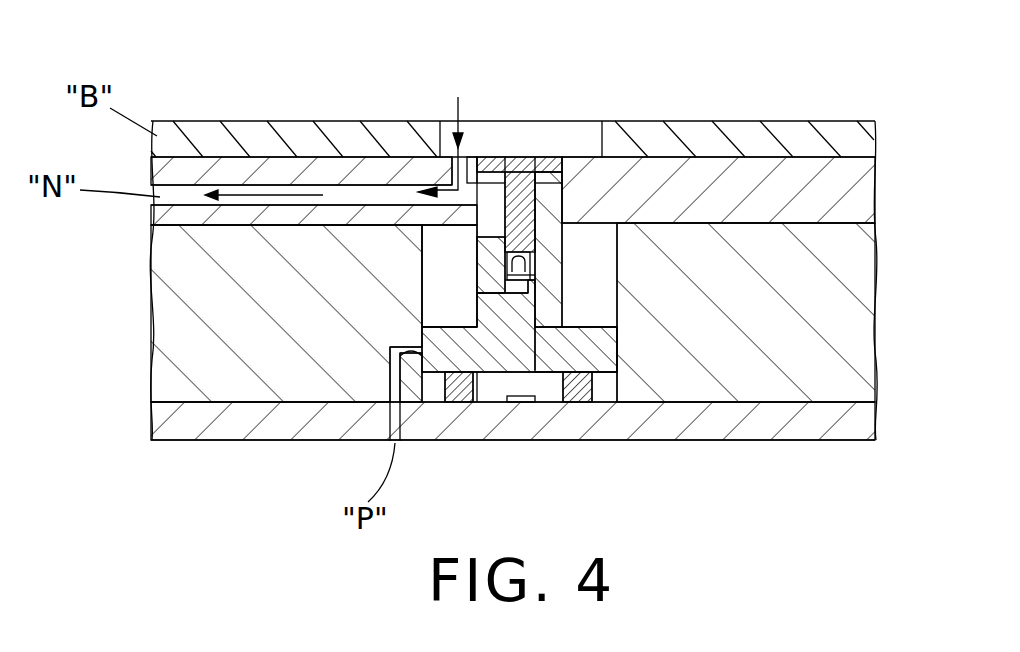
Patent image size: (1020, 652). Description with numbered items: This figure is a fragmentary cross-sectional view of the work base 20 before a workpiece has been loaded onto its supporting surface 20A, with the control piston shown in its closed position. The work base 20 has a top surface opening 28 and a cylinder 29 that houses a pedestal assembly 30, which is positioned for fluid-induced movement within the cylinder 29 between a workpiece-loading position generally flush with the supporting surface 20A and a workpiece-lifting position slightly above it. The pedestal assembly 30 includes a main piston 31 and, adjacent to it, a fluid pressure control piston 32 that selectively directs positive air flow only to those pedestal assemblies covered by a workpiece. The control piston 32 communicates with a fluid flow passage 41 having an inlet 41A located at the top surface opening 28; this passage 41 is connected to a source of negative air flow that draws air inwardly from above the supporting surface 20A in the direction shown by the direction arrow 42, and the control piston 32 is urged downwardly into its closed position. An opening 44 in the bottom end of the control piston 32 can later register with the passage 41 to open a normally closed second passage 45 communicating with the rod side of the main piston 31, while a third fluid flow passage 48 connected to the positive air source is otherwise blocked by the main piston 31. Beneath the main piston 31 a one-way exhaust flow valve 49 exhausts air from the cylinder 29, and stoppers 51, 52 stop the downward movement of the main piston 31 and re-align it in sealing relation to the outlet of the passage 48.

The work base 20 is at (232, 86).
The supporting surface 20A is at (834, 118).
The top surface opening 28 is at (600, 140).
The cylinder 29 is at (432, 293).
The pedestal assembly 30 is at (553, 350).
The main piston 31 is at (547, 279).
The fluid pressure control piston 32 is at (522, 210).
The fluid flow passage 41 is at (358, 200).
The inlet 41A is at (466, 156).
The direction arrow 42 is at (452, 98).
The opening 44 is at (522, 280).
The second passage 45 is at (487, 305).
The third fluid flow passage 48 is at (398, 357).
The one-way exhaust flow valve 49 is at (521, 390).
The stopper 51 is at (458, 402).
The stopper 52 is at (585, 390).